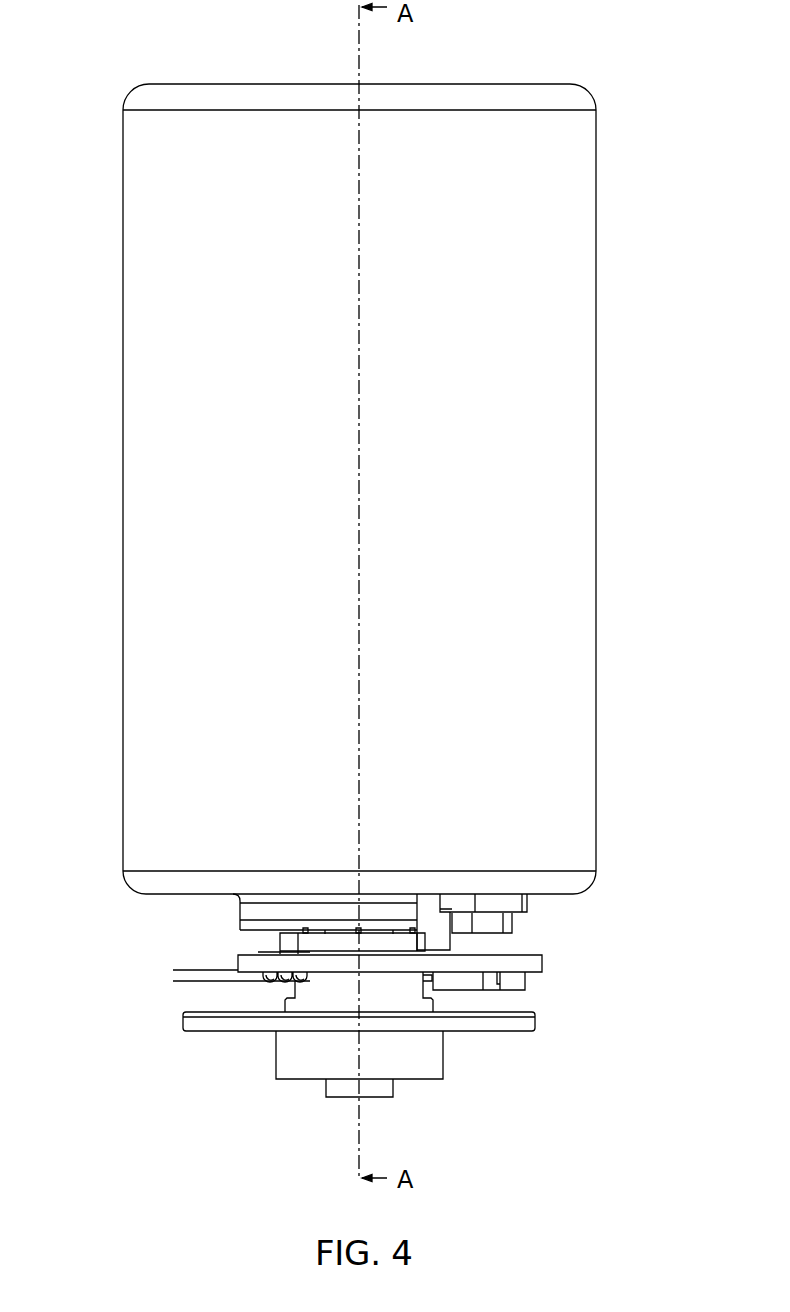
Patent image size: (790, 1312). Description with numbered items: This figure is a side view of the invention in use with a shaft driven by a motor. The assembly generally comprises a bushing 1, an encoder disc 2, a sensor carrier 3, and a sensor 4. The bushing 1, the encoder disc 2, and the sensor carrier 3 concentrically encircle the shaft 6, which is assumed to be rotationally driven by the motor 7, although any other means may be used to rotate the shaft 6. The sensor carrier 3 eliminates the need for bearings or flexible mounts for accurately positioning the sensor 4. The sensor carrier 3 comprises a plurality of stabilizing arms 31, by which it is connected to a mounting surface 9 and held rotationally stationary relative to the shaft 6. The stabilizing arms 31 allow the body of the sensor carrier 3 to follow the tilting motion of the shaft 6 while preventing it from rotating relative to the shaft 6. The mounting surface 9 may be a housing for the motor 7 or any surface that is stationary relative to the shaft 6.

The bushing 1 is at (432, 1056).
The encoder disc 2 is at (193, 1014).
The sensor carrier 3 is at (287, 947).
The stabilizing arms 31 is at (485, 907).
The sensor 4 is at (510, 985).
The shaft 6 is at (365, 1090).
The motor 7 is at (588, 786).
The mounting surface 9 is at (535, 895).